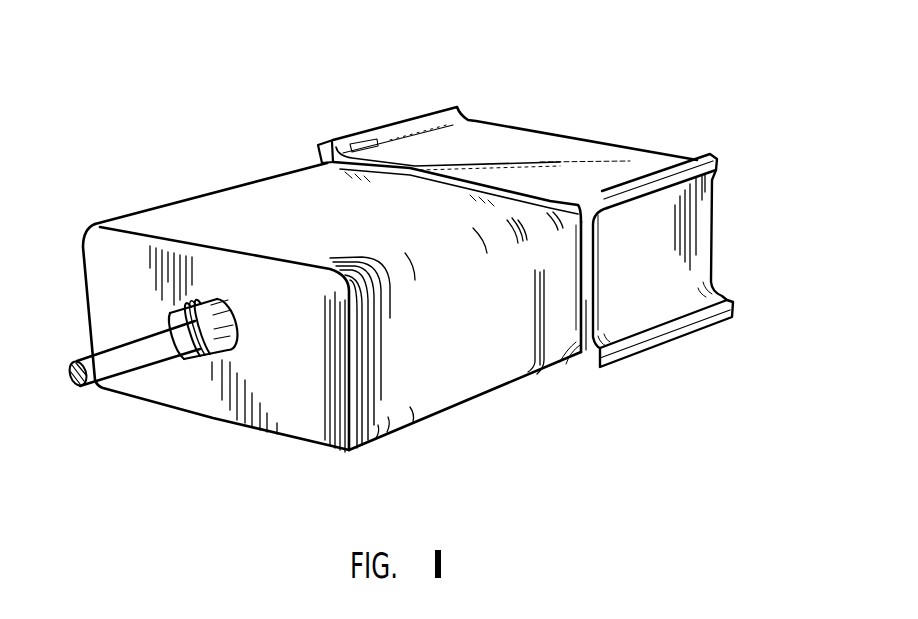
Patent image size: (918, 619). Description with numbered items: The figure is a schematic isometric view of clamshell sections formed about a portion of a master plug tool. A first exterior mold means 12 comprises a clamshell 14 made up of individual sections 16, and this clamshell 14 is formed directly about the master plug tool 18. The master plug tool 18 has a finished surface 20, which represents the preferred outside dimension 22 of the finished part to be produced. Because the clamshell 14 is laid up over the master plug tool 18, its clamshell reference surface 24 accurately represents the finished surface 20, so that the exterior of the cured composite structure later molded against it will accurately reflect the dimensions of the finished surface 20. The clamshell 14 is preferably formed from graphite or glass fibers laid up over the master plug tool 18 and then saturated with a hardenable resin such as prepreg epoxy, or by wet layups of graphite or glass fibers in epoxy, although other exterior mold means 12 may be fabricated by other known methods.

The first exterior mold means 12 is at (590, 108).
The clamshell 14 is at (617, 157).
The individual sections 16 is at (693, 238).
The master plug tool 18 is at (180, 169).
The finished surface 20 is at (407, 372).
The preferred outside dimension 22 is at (304, 193).
The clamshell reference surface 24 is at (576, 329).